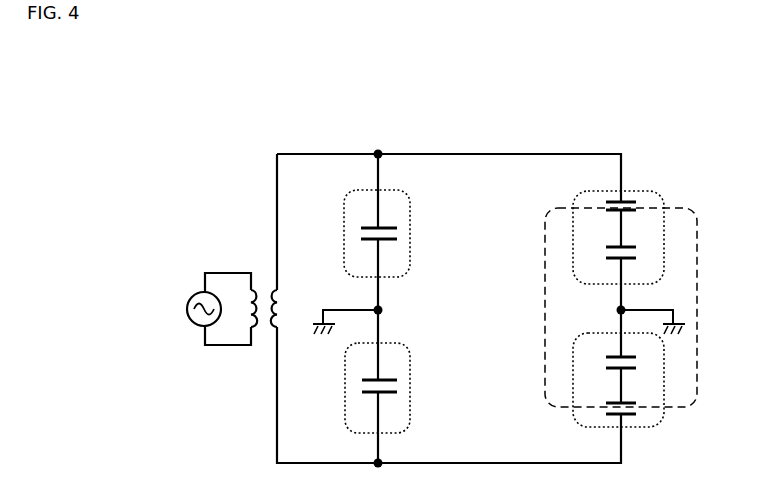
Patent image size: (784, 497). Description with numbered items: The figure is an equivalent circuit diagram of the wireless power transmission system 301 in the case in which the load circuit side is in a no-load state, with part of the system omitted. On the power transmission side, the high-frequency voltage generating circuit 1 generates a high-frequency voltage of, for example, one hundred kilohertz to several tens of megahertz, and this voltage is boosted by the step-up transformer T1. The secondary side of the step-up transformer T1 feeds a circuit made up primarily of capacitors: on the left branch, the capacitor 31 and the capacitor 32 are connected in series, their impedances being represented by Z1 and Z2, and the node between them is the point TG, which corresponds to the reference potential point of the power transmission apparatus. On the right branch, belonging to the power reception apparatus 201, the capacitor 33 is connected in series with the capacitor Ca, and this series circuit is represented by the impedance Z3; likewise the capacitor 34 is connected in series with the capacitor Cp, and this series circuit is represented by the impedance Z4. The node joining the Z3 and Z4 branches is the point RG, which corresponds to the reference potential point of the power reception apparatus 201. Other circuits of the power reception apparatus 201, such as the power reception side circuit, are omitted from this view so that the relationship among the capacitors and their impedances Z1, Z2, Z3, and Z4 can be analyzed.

The wireless power transmission system 301 is at (443, 104).
The high-frequency voltage generating circuit 1 is at (190, 300).
The step-up transformer T1 is at (263, 290).
The impedance Z1 is at (365, 233).
The capacitor 31 is at (383, 223).
The impedance Z2 is at (365, 388).
The capacitor 32 is at (383, 398).
The reference potential point of the power transmission apparatus TG is at (385, 308).
The power reception apparatus 201 is at (698, 211).
The impedance Z3 is at (623, 228).
The capacitor Ca is at (608, 207).
The capacitor 33 is at (615, 264).
The impedance Z4 is at (623, 391).
The capacitor 34 is at (614, 352).
The capacitor Cp is at (608, 409).
The reference potential point of the power reception apparatus RG is at (615, 308).